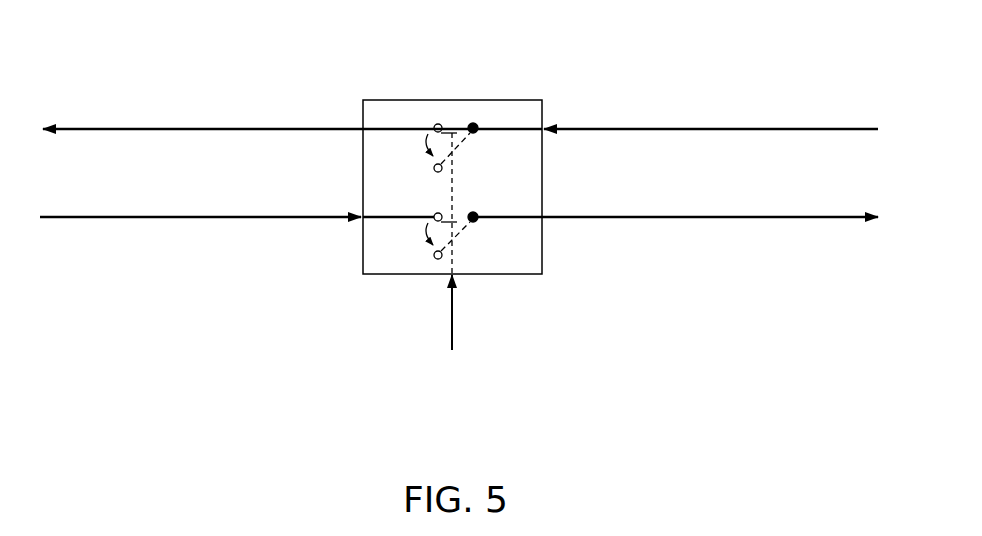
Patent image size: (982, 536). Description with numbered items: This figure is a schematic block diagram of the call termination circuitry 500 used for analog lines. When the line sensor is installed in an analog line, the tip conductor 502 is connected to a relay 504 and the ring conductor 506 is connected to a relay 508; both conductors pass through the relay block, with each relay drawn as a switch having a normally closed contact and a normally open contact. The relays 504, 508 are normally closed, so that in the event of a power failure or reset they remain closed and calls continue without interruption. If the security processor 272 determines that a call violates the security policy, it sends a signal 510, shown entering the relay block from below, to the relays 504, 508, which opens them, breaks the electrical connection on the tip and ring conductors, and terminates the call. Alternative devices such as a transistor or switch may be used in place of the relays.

The call termination circuitry 500 is at (158, 60).
The tip conductor 502 is at (793, 126).
The relay 504 is at (477, 123).
The ring conductor 506 is at (793, 214).
The relay 508 is at (477, 212).
The signal 510 is at (453, 322).
The security processor 272 is at (455, 403).